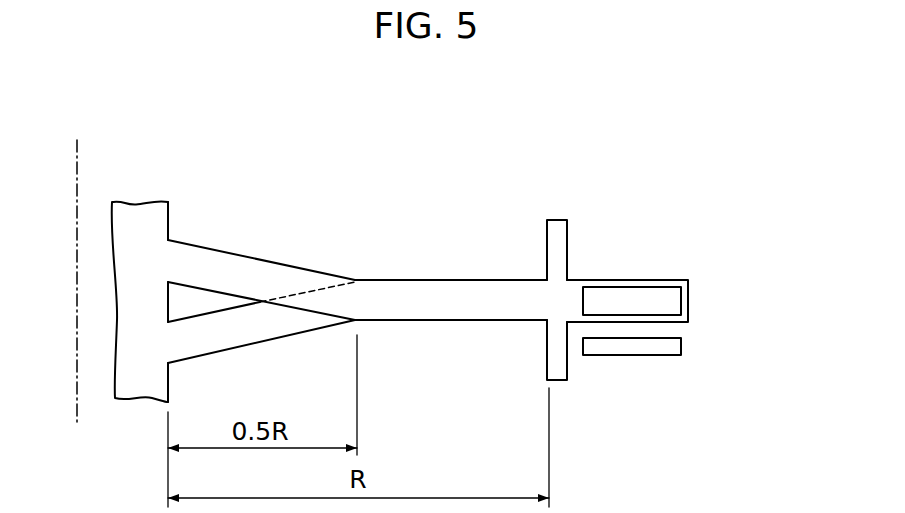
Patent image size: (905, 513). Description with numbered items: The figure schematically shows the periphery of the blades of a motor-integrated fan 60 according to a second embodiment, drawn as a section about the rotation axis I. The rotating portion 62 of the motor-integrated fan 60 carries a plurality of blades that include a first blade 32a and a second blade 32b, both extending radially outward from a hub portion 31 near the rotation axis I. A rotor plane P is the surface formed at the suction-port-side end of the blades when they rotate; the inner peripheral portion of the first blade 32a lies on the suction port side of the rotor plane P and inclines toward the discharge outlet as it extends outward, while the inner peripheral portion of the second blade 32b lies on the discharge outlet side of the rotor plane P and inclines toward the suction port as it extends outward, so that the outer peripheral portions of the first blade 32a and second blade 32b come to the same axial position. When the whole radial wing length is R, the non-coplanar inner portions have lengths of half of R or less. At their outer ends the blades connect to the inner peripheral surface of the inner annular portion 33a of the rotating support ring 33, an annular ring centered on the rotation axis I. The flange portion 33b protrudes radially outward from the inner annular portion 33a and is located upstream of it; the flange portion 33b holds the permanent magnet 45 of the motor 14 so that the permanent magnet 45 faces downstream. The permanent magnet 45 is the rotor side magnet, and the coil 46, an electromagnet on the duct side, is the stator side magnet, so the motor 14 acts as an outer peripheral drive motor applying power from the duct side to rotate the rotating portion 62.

The motor-integrated fan 60 is at (478, 100).
The rotating portion 62 is at (368, 143).
The feed portion 31 is at (173, 210).
The first blade 32a is at (270, 263).
The second blade 32b is at (278, 336).
The rotor plane P is at (420, 280).
The rotating support ring 33 is at (553, 215).
The inner annular portion 33a is at (562, 382).
The flange portion 33b is at (648, 280).
The permanent magnet 45 is at (673, 287).
The coil 46 is at (682, 346).
The motor 14 is at (695, 362).
The rotation axis I is at (77, 152).